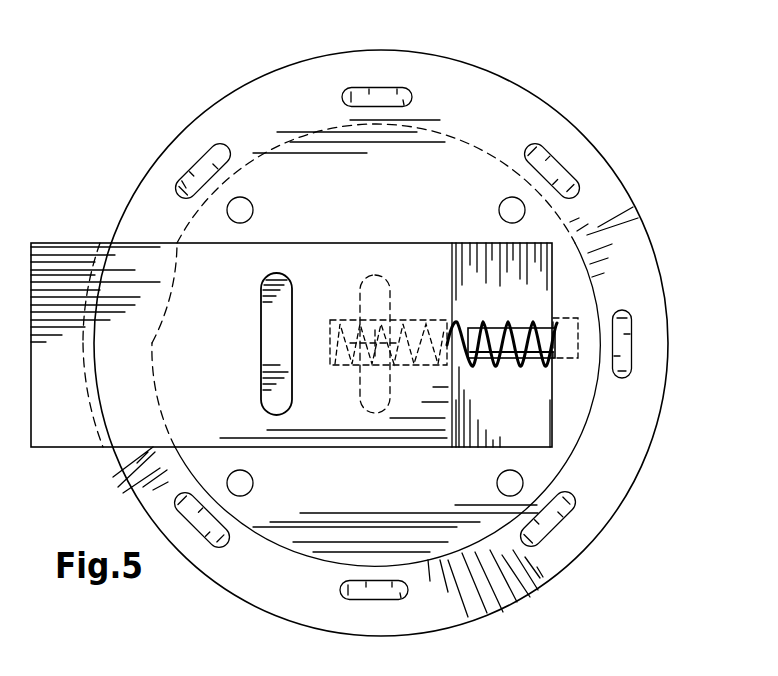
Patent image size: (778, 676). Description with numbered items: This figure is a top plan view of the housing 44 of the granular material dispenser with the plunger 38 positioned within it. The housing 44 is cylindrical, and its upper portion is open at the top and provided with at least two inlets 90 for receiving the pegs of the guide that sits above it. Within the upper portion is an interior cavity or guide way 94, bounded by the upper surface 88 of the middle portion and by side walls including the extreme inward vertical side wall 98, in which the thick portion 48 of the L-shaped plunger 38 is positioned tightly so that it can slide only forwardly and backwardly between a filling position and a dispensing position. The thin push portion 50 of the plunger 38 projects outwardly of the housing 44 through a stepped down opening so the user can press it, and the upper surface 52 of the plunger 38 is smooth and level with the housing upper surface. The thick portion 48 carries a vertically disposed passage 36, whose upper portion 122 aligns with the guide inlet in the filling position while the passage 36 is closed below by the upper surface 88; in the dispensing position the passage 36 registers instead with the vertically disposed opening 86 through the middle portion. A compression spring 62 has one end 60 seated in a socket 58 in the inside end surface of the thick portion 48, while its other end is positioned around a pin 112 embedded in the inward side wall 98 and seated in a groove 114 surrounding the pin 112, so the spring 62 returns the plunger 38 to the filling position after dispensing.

The passage 36 is at (288, 372).
The plunger 38 is at (78, 408).
The housing 44 is at (308, 203).
The thick portion 48 is at (337, 395).
The push portion 50 is at (78, 292).
The upper surface 52 is at (118, 477).
The socket 58 is at (403, 320).
The end of compression spring 60 is at (350, 320).
The compression spring 62 is at (503, 323).
The opening 86 is at (386, 396).
The upper surface of middle portion 88 is at (523, 427).
The inlets 90 is at (357, 162).
The cavity 94 is at (510, 427).
The inward vertical side wall 98 is at (552, 270).
The pin 112 is at (537, 357).
The groove 114 is at (557, 340).
The upper portion of passage 122 is at (278, 317).